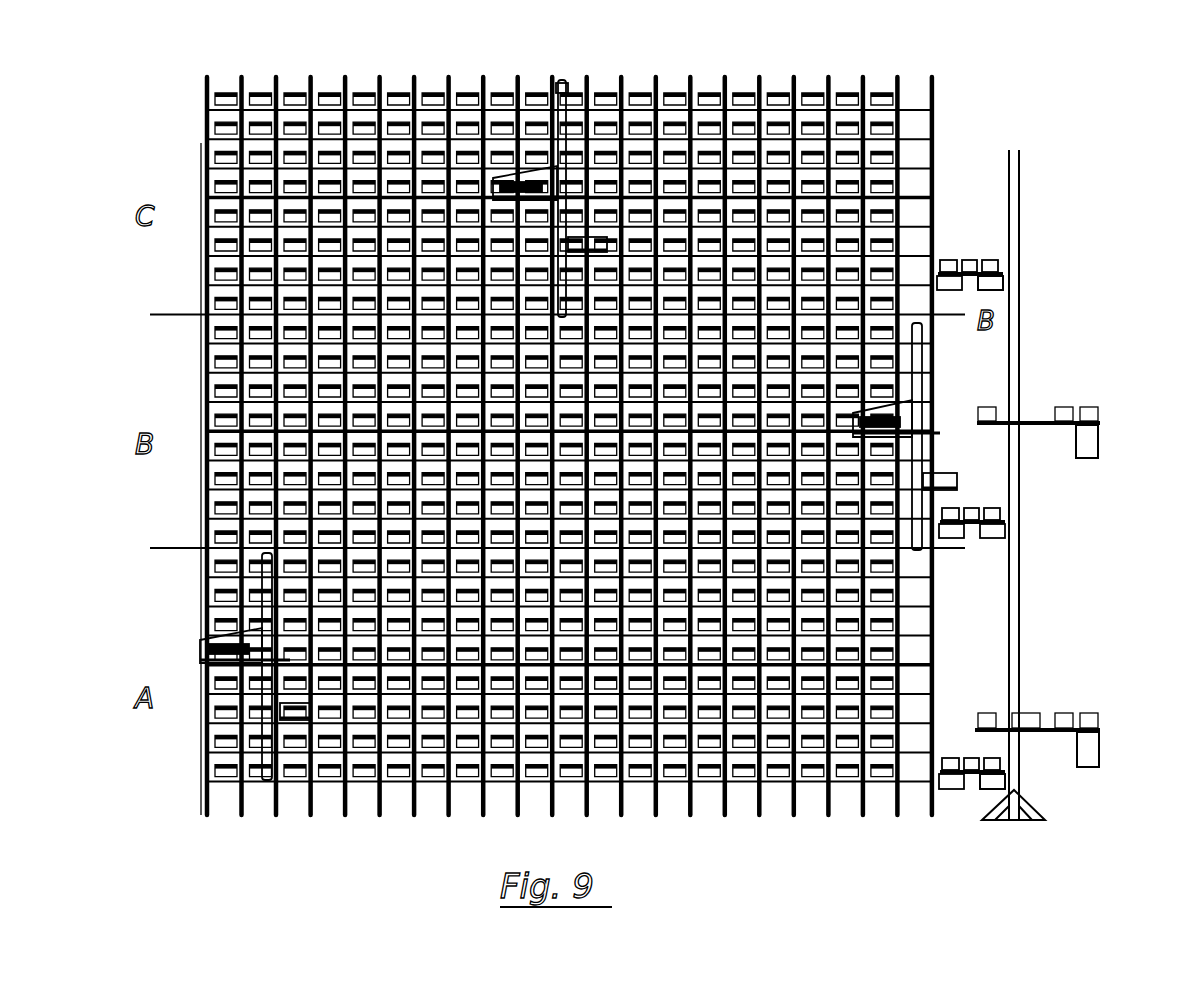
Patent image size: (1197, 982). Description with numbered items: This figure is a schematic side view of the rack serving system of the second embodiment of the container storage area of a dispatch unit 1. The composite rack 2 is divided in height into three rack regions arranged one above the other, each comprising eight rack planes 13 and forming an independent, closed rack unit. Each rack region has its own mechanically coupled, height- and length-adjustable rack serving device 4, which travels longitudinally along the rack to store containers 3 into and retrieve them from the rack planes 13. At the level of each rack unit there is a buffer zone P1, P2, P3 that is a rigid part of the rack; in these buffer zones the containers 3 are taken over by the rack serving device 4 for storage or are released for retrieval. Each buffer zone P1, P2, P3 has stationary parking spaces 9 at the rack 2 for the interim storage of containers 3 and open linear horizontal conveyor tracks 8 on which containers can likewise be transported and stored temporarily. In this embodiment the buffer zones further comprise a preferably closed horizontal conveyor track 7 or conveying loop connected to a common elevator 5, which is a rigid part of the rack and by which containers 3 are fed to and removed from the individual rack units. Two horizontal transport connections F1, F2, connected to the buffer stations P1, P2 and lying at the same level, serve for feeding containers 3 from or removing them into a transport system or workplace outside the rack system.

The dispatch unit 1 is at (1102, 103).
The composite rack 2 is at (205, 82).
The container 3 is at (1093, 712).
The rack serving device 4 is at (566, 86).
The elevator 5 is at (978, 728).
The closed horizontal conveyor track 7 is at (1034, 421).
The open linear horizontal conveyor track 8 is at (992, 288).
The stationary parking space 9 is at (948, 270).
The rack plane 13 is at (212, 298).
The buffer zone P1 is at (1045, 684).
The buffer zone P2 is at (1045, 488).
The buffer zone P3 is at (1057, 278).
The horizontal transport connection F1 is at (1099, 750).
The horizontal transport connection F2 is at (1098, 446).